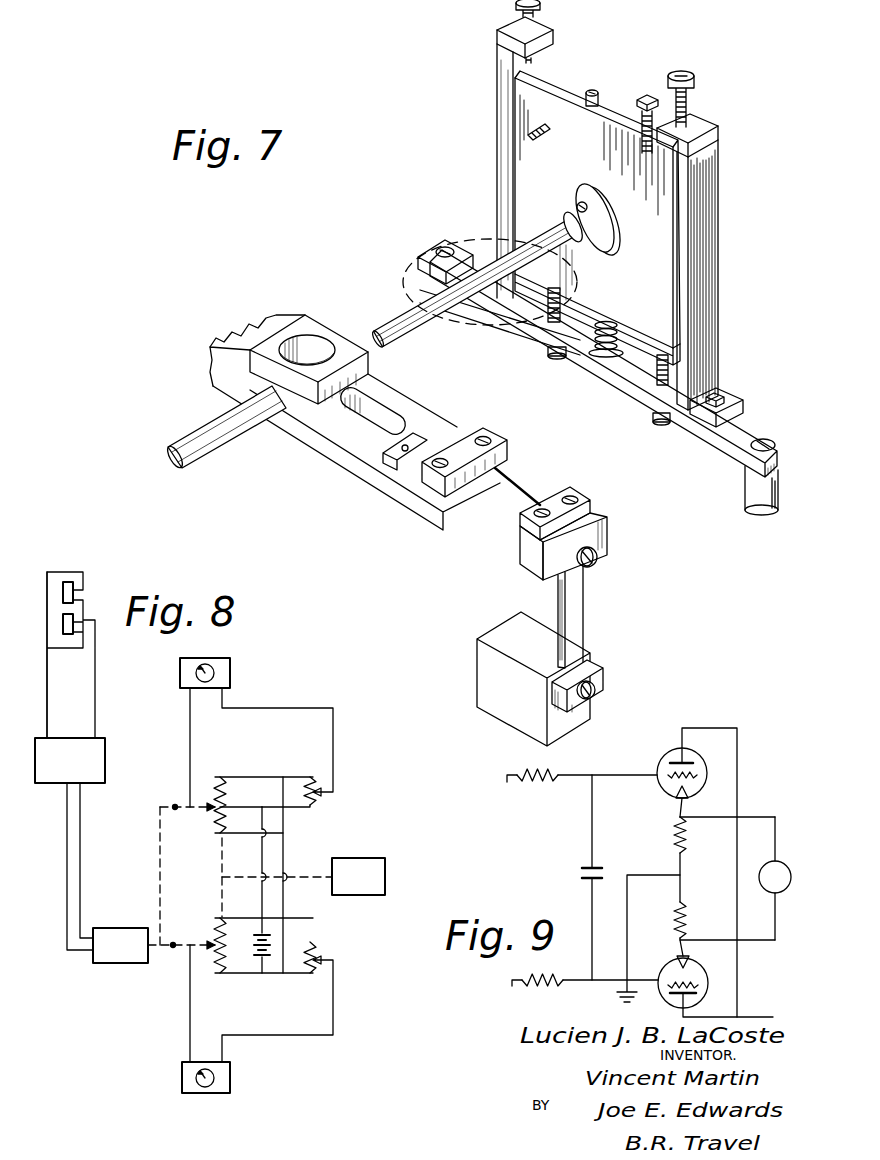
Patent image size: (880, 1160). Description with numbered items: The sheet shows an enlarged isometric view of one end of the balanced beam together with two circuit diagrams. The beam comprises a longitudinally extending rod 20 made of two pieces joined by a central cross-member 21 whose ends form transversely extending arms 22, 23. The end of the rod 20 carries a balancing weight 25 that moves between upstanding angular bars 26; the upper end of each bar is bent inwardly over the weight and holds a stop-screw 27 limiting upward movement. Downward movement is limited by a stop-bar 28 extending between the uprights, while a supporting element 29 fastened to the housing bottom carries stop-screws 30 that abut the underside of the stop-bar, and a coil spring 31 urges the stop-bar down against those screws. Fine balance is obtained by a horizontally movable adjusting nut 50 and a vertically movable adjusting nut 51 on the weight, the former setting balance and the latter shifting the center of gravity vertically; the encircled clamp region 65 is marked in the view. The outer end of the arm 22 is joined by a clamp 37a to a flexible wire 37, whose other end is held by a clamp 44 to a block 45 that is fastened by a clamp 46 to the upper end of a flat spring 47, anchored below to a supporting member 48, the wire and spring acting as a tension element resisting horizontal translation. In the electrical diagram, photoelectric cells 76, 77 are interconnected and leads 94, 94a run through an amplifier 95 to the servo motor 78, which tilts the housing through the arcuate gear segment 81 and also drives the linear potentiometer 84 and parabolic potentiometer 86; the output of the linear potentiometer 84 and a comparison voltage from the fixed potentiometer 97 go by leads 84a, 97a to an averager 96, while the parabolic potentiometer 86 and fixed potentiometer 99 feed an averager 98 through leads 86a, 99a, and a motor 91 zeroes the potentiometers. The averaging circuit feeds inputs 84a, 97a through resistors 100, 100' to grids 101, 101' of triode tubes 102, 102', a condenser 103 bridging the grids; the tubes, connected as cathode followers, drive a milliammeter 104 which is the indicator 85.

In FIG. 7, the rod 20 is at (373, 325).
In FIG. 7, the cross-member 21 is at (292, 423).
In FIG. 7, the arm 22 is at (400, 490).
In FIG. 7, the arm 23 is at (212, 358).
In FIG. 7, the balancing weight 25 is at (613, 118).
In FIG. 7, the upstanding angular bar 26 is at (497, 103).
In FIG. 7, the stop-screw 27 is at (541, 6).
In FIG. 7, the stop-bar 28 is at (640, 338).
In FIG. 7, the supporting element 29 is at (745, 425).
In FIG. 7, the stop-screw 30 is at (553, 322).
In FIG. 7, the coil spring 31 is at (597, 345).
In FIG. 7, the flexible element or wire 37 is at (516, 488).
In FIG. 7, the clamp 37a is at (508, 449).
In FIG. 7, the clamp 44 is at (592, 500).
In FIG. 7, the block 45 is at (531, 565).
In FIG. 7, the clamp 46 is at (609, 535).
In FIG. 7, the flat spring 47 is at (585, 598).
In FIG. 7, the supporting member 48 is at (505, 628).
In FIG. 7, the horizontally movable adjusting nut 50 is at (590, 90).
In FIG. 7, the vertically movable adjusting nut 51 is at (647, 95).
In FIG. 7, the clamp assembly 65 is at (396, 272).
In FIG. 8, the photoelectric cell 76 is at (63, 624).
In FIG. 8, the photoelectric cell 77 is at (68, 582).
In FIG. 8, the servo motor 78 is at (118, 928).
In FIG. 8, the arcuate gear segment 81 is at (215, 665).
In FIG. 8, the linear potentiometer 84 is at (212, 955).
In FIG. 8, the lead 84a is at (190, 1020).
In FIG. 9, the lead 84a is at (505, 773).
In FIG. 8, the indicator 85 is at (198, 1095).
In FIG. 8, the parabolic potentiometer 86 is at (214, 813).
In FIG. 8, the lead 86a is at (190, 718).
In FIG. 8, the motor 91 is at (358, 858).
In FIG. 8, the lead 94 is at (47, 673).
In FIG. 8, the lead 94a is at (95, 664).
In FIG. 8, the amplifier 95 is at (105, 752).
In FIG. 8, the averager 96 is at (182, 1080).
In FIG. 8, the fixed potentiometer 97 is at (318, 972).
In FIG. 8, the lead 97a is at (335, 1019).
In FIG. 9, the lead 97a is at (510, 981).
In FIG. 8, the averager 98 is at (200, 658).
In FIG. 8, the fixed potentiometer 99 is at (316, 800).
In FIG. 8, the lead 99a is at (333, 736).
In FIG. 9, the resistor 100 is at (563, 790).
In FIG. 9, the resistor 100' is at (590, 961).
In FIG. 9, the grid 101 is at (725, 776).
In FIG. 9, the grid 101' is at (667, 961).
In FIG. 9, the triode tube 102 is at (721, 872).
In FIG. 9, the triode tube 102' is at (725, 986).
In FIG. 9, the condenser 103 is at (580, 873).
In FIG. 9, the milliammeter 104 is at (765, 893).